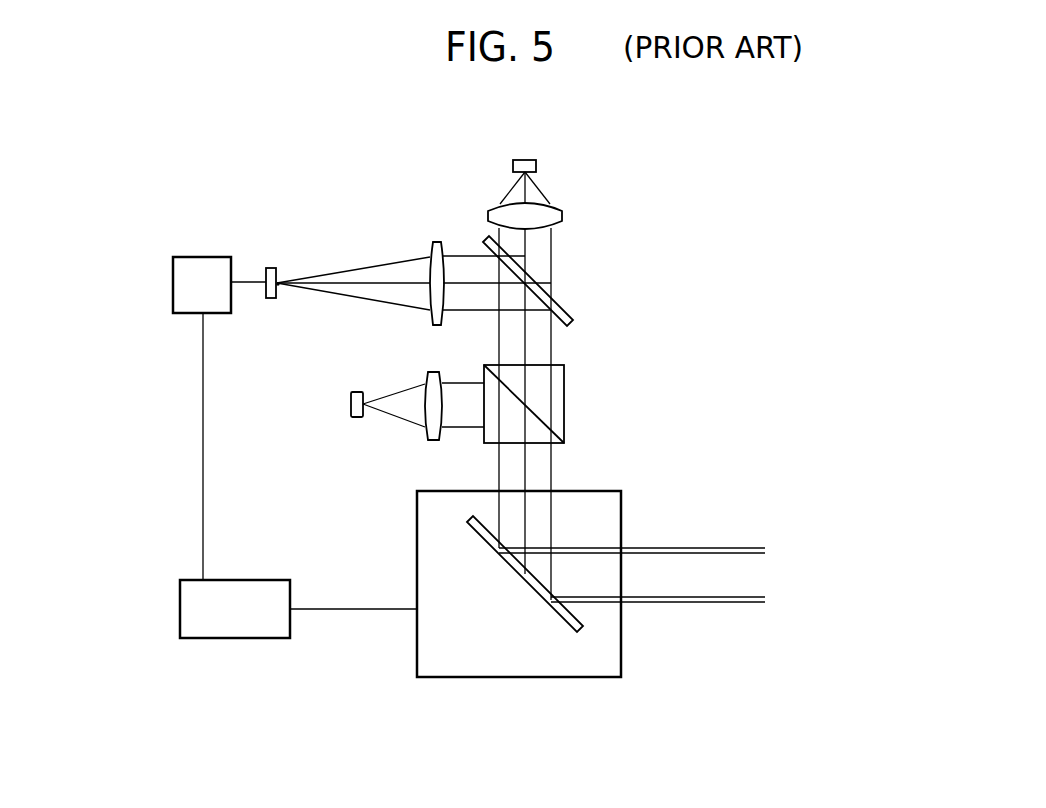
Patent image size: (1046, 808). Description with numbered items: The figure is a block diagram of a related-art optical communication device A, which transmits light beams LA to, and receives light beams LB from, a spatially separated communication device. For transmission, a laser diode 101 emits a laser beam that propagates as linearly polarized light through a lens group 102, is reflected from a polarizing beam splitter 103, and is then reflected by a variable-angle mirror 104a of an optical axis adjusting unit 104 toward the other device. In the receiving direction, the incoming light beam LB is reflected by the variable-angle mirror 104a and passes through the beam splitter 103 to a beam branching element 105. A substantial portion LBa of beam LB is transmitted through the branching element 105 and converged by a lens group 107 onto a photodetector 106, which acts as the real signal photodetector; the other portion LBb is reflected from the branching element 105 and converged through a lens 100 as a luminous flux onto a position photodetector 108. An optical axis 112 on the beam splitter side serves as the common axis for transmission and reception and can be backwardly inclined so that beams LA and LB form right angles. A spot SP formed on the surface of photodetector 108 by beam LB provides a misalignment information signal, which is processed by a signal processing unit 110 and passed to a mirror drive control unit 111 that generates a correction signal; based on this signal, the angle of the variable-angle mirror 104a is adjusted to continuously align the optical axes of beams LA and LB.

The condenser lens 100 is at (436, 240).
The laser diode 101 is at (355, 418).
The lens group 102 is at (452, 362).
The polarizing beam splitter 103 is at (565, 375).
The optical axis adjusting unit 104 is at (476, 678).
The variable-angle mirror 104a is at (575, 627).
The beam branching element 105 is at (543, 290).
The photodetector 106 is at (525, 158).
The lens group 107 is at (562, 222).
The position photodetector 108 is at (270, 268).
The signal processing unit 110 is at (200, 261).
The mirror drive control unit 111 is at (220, 637).
The optical axis 112 is at (523, 513).
The spot SP is at (284, 292).
The light beam LA is at (770, 551).
The light beam LB is at (825, 547).
The portion of light beam LB LBa is at (528, 252).
The portion of light beam LB LBb is at (465, 282).
The optical communication device A is at (735, 311).